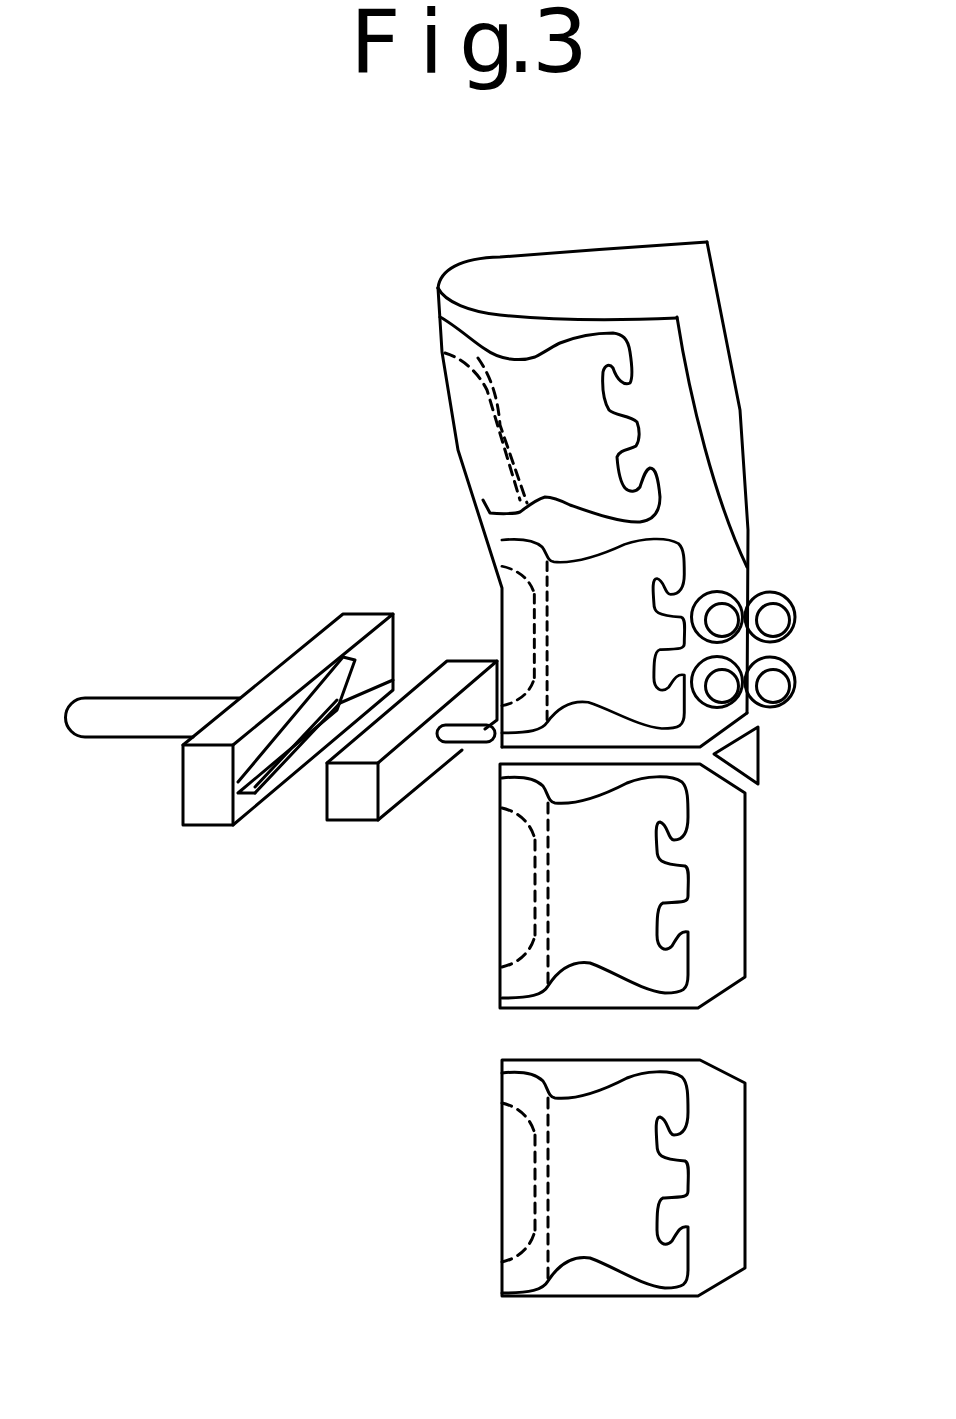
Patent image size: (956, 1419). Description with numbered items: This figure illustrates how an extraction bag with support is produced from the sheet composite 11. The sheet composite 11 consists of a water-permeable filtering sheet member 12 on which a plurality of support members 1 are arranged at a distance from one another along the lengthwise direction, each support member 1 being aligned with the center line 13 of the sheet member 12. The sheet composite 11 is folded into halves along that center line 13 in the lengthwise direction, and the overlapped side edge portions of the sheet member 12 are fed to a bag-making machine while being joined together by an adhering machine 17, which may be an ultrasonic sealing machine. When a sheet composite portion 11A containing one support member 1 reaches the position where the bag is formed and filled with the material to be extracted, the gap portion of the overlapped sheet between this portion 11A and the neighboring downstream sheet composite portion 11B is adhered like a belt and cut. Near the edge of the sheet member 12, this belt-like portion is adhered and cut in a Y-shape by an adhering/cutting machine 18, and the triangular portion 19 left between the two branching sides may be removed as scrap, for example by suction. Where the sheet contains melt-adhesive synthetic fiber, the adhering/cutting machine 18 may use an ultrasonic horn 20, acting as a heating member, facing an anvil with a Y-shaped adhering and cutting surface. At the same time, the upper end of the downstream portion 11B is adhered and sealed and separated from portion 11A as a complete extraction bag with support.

The support member 1 is at (653, 553).
The sheet composite 11 is at (503, 293).
The sheet composite portion 11A is at (717, 540).
The sheet composite portion 11B is at (710, 807).
The filtering sheet member 12 is at (673, 412).
The center line 13 is at (445, 400).
The adhering machine 17 is at (768, 625).
The adhering/cutting machine 18 is at (757, 755).
The triangular portion 19 is at (360, 802).
The ultrasonic horn 20 is at (210, 805).